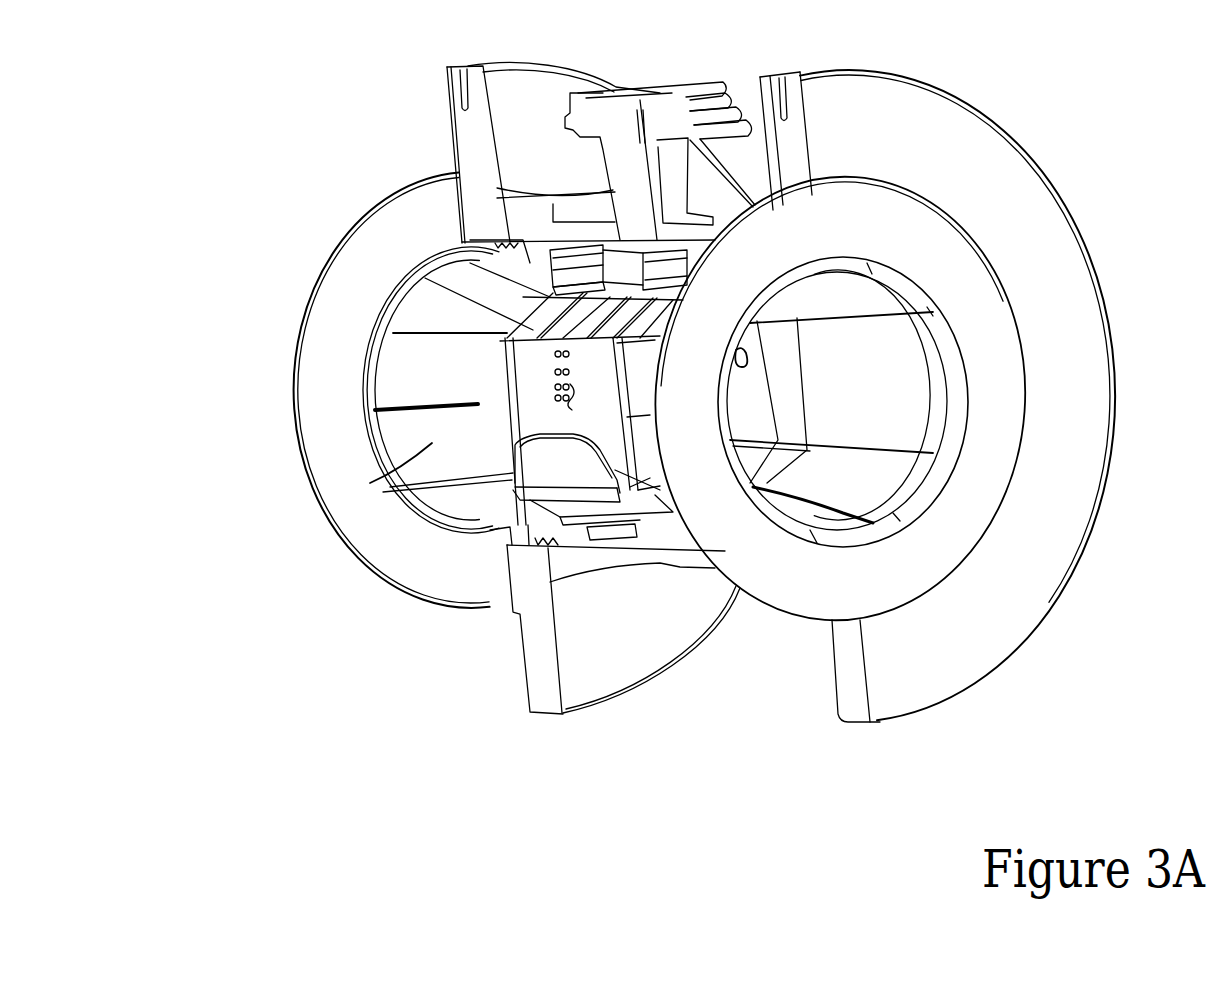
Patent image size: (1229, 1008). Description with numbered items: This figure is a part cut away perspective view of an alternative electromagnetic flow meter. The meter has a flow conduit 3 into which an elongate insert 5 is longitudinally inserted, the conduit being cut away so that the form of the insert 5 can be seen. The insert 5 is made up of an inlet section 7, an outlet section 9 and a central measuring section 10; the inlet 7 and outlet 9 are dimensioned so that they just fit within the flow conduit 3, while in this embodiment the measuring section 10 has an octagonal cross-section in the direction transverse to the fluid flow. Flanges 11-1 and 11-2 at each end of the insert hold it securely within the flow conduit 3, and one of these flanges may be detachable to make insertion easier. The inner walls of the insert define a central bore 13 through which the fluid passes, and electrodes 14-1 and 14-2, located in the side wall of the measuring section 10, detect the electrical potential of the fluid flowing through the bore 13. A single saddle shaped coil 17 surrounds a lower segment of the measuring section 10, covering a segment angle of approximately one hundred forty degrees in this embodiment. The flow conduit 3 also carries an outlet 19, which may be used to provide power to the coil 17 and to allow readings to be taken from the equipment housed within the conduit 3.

The flow conduit 3 is at (650, 557).
The elongate insert 5 is at (429, 457).
The inlet section 7 is at (185, 403).
The outlet section 9 is at (833, 481).
The central measuring section 10 is at (522, 361).
The flange 11-1 is at (323, 300).
The flange 11-2 is at (980, 292).
The central bore 13 is at (843, 387).
The electrode 14-1 is at (567, 392).
The electrode 14-2 is at (744, 358).
The saddle shaped coil 17 is at (545, 460).
The outlet 19 is at (720, 85).